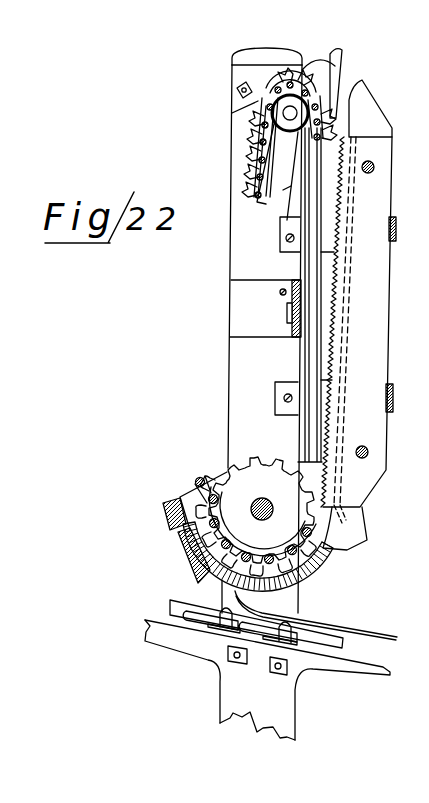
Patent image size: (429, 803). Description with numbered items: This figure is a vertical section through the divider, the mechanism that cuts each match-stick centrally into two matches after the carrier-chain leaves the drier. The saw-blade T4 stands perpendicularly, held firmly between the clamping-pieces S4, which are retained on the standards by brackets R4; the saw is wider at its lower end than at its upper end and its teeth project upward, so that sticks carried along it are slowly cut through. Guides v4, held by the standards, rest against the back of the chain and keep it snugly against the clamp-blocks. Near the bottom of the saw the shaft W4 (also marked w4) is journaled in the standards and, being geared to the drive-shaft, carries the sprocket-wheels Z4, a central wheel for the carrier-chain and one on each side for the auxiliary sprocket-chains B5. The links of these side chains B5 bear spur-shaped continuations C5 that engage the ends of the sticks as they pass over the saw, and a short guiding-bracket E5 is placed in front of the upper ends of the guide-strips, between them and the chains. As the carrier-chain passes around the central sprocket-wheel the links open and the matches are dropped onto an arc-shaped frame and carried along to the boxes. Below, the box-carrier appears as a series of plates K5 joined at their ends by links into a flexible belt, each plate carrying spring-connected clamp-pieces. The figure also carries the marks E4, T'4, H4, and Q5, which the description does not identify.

The housing frame E4 is at (267, 394).
The guiding-bracket E5 is at (342, 66).
The shaft w4 is at (291, 128).
The spur-shaped continuations C5 is at (246, 177).
The sprocket-chains B5 is at (275, 172).
The guides v4 is at (291, 187).
The clamping-pieces S4 is at (370, 108).
The saw-blade T4 is at (356, 322).
The brackets R4 is at (396, 410).
The saw blade lower guide T'4 is at (345, 510).
The sprocket-wheels Z4 is at (258, 524).
The shaft W4 is at (273, 514).
The chain guide segment H4 is at (178, 560).
The curved rod Q5 is at (268, 594).
The plates K5 is at (294, 642).